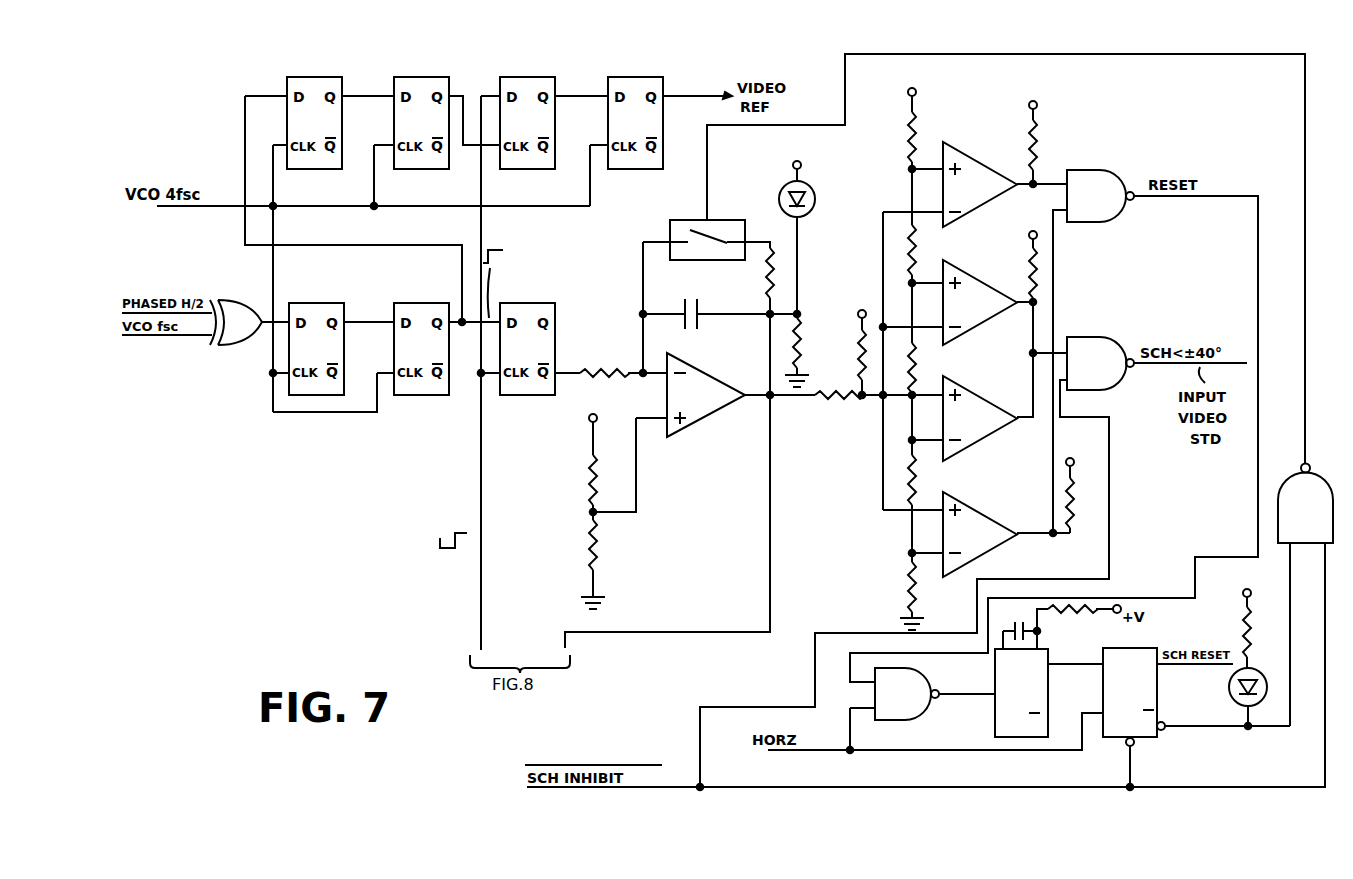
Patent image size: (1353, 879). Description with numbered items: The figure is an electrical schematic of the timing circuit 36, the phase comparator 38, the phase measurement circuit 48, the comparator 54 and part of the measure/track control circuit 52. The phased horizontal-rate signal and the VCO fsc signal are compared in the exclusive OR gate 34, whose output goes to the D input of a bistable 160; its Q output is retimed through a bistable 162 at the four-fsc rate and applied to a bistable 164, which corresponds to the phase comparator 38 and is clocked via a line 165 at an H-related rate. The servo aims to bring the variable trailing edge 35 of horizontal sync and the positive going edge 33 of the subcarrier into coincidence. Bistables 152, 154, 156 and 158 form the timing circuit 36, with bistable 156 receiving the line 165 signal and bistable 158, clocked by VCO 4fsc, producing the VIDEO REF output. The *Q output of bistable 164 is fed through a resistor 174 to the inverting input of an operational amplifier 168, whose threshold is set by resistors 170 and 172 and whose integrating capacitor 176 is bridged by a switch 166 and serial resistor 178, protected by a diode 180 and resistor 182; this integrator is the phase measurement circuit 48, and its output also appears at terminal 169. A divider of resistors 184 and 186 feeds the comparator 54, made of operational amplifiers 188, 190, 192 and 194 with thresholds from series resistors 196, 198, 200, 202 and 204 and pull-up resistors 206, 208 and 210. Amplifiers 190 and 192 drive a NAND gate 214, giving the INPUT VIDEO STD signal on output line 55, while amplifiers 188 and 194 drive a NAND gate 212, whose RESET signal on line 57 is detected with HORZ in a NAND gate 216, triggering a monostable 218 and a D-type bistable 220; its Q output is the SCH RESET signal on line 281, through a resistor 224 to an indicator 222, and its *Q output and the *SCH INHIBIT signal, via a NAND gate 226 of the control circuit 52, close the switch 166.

The bistable 152 is at (316, 77).
The bistable 154 is at (423, 77).
The bistable 156 is at (533, 77).
The D-type bistable 158 is at (635, 77).
The timing circuit 36 is at (525, 190).
The bistable 160 is at (326, 303).
The bistable 162 is at (410, 395).
The bistable 164 is at (533, 303).
The exclusive OR gate 34 is at (240, 298).
The positive going edge 33 is at (505, 250).
The phase comparator 38 is at (470, 426).
The variable trailing edge 35 is at (440, 538).
The line 165 is at (481, 636).
The terminal 169 is at (575, 645).
The resistor 174 is at (586, 371).
The operational amplifier 168 is at (702, 426).
The resistor 170 is at (590, 479).
The resistor 172 is at (585, 541).
The phase measurement circuit 48 is at (655, 470).
The capacitor 176 is at (682, 305).
The switch 166 is at (740, 220).
The serial resistor 178 is at (777, 275).
The diode 180 is at (813, 195).
The resistor 182 is at (822, 352).
The resistor 186 is at (856, 362).
The resistor 184 is at (840, 400).
The resistor 196 is at (908, 143).
The resistor 198 is at (918, 264).
The resistor 200 is at (922, 366).
The resistor 202 is at (920, 489).
The resistor 204 is at (908, 580).
The operational amplifier 188 is at (986, 151).
The operational amplifier 190 is at (990, 273).
The operational amplifier 192 is at (978, 394).
The operational amplifier 194 is at (991, 518).
The resistor 206 is at (1043, 139).
The pull up resistor 208 is at (1040, 252).
The resistor 210 is at (1081, 522).
The comparator 54 is at (1080, 118).
The NAND gate 212 is at (1106, 222).
The NAND gate 214 is at (1110, 390).
The output line 55 is at (1240, 365).
The line 57 is at (1258, 262).
The NAND gate 226 is at (1281, 500).
The NAND gate 216 is at (921, 673).
The monostable 218 is at (995, 727).
The D-type bistable 220 is at (1146, 741).
The resistor 224 is at (1240, 636).
The light emitting diode 222 is at (1232, 696).
The line 281 is at (1178, 668).
The measure/track control circuit 52 is at (1088, 779).